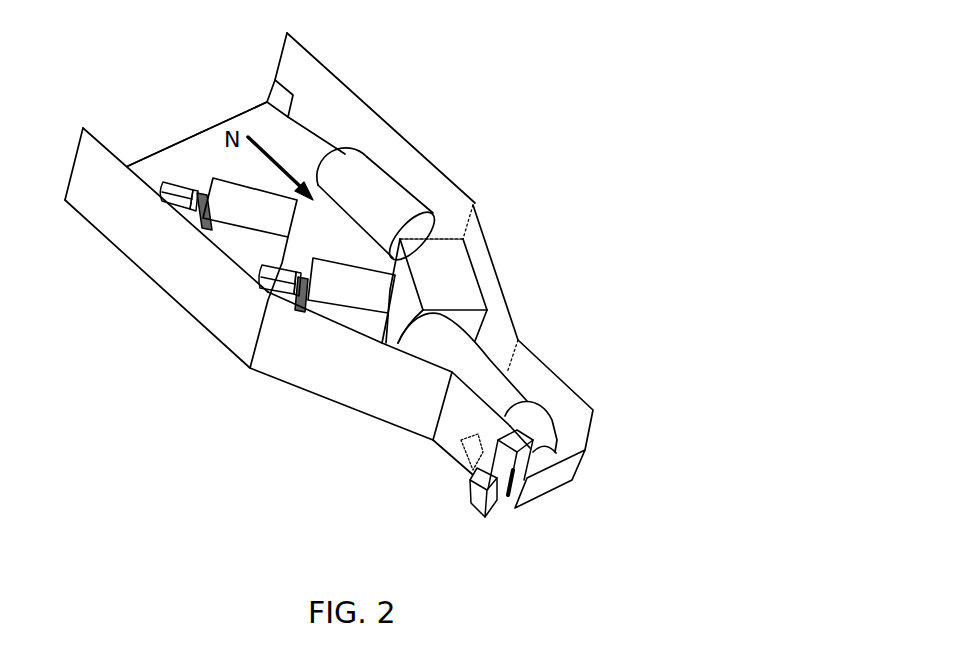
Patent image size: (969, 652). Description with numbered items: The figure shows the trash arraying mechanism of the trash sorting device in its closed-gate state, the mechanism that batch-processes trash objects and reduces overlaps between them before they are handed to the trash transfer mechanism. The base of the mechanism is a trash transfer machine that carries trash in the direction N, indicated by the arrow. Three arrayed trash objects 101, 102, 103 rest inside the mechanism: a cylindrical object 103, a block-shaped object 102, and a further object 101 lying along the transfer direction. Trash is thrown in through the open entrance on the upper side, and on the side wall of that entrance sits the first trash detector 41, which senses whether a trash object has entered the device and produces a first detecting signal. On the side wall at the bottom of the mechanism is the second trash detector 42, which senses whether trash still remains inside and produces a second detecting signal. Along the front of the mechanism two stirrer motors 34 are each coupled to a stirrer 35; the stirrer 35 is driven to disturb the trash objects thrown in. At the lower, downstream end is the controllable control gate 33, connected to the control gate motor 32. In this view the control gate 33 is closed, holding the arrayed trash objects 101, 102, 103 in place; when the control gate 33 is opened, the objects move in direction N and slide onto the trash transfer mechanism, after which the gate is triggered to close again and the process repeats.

The trash object 101 is at (341, 288).
The trash object 102 is at (475, 269).
The trash object 103 is at (409, 190).
The first trash detector 41 is at (301, 123).
The second trash detector 42 is at (418, 459).
The control gate motor 32 is at (476, 476).
The control gate 33 is at (584, 443).
The stirrer motor 34 is at (174, 285).
The stirrer 35 is at (251, 306).